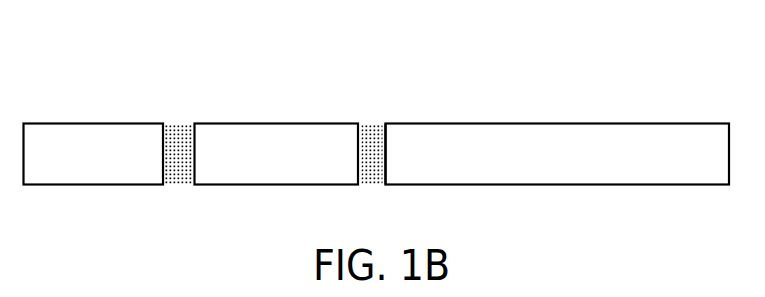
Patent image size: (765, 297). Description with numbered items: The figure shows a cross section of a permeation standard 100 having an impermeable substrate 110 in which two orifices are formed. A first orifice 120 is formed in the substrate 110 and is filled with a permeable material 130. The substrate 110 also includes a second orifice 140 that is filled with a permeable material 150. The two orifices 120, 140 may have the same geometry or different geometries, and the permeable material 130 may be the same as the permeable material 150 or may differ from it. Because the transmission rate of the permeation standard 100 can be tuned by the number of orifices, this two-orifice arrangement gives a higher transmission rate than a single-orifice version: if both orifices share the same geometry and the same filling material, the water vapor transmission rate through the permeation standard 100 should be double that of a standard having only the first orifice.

The permeation standard 100 is at (85, 84).
The impermeable substrate 110 is at (557, 185).
The orifice 120 is at (358, 108).
The permeable material 130 is at (384, 122).
The second orifice 140 is at (201, 112).
The permeable material 150 is at (183, 187).